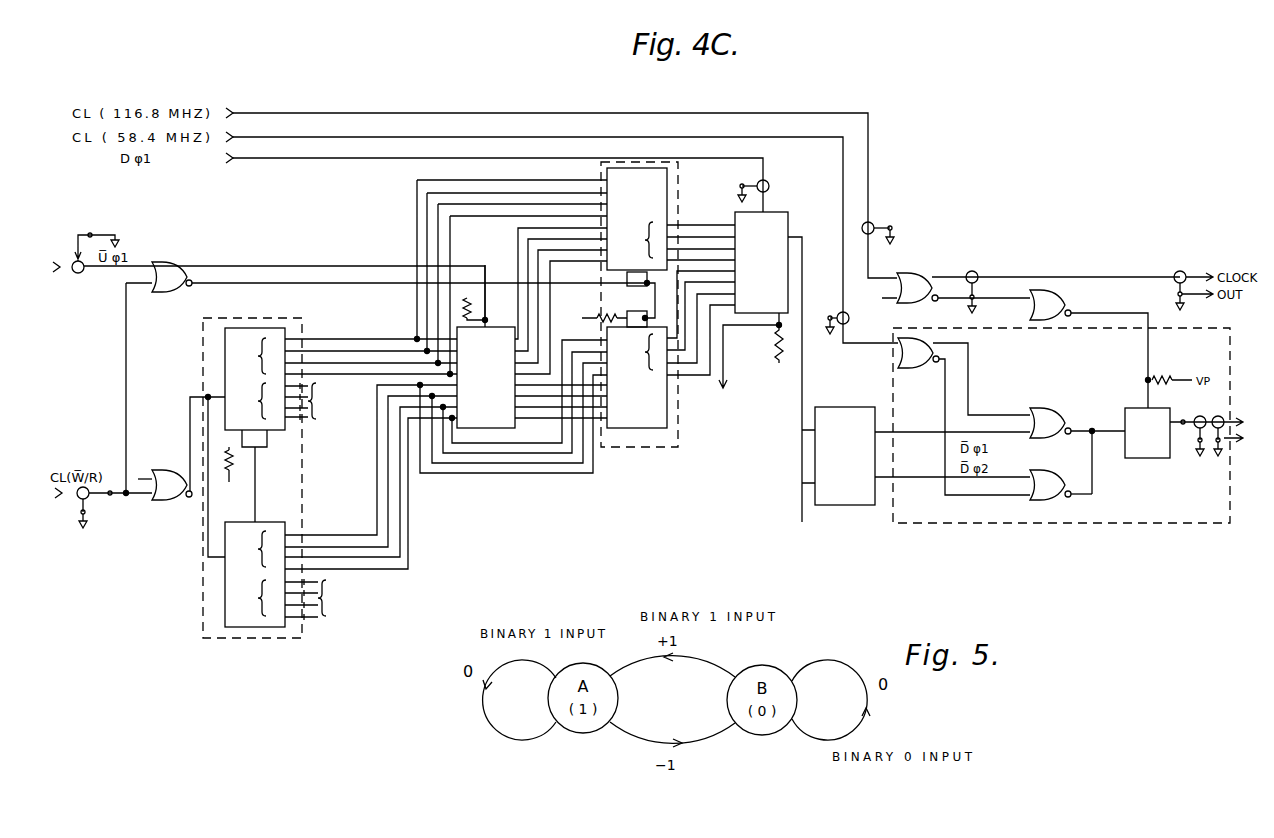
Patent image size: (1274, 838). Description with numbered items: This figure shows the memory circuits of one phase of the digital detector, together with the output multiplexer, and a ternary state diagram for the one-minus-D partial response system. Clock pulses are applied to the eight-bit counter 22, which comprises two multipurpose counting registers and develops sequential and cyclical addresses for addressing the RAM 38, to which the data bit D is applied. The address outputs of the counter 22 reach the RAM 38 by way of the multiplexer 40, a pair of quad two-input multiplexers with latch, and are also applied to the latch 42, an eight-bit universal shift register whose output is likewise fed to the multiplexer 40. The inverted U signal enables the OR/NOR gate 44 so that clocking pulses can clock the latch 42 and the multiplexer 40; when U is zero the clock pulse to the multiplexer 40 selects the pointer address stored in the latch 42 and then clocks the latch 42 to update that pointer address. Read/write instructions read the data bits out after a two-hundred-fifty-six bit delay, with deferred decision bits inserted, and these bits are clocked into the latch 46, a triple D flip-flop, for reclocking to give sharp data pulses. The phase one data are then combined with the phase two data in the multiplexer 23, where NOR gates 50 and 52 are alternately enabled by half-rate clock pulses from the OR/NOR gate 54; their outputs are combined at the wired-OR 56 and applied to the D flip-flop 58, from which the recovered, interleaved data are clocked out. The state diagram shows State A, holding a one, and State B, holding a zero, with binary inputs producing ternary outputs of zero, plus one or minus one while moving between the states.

The counter 22 is at (295, 320).
The multiplexer 23 is at (1215, 523).
The RAM 38 is at (788, 212).
The multiplexer 40 is at (638, 447).
The latch 42 is at (510, 428).
The OR/NOR gate 44 is at (180, 260).
The latch 46 is at (858, 407).
The NOR gate 50 is at (1042, 408).
The NOR gate 52 is at (1055, 500).
The OR/NOR gate 54 is at (917, 368).
The wired-OR 56 is at (1094, 428).
The D flip-flop 58 is at (1127, 458).